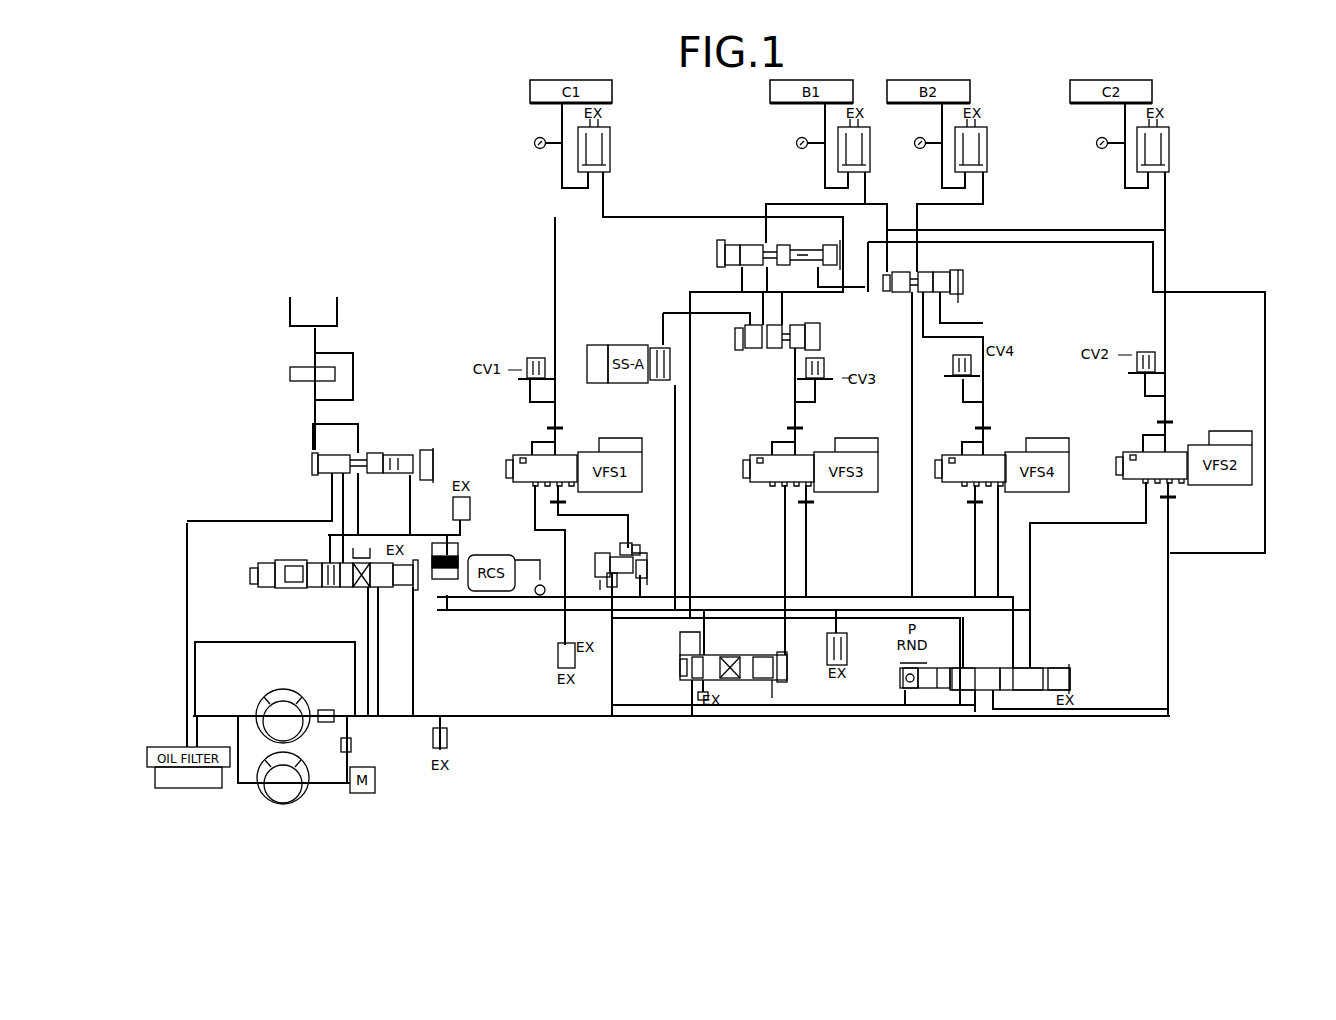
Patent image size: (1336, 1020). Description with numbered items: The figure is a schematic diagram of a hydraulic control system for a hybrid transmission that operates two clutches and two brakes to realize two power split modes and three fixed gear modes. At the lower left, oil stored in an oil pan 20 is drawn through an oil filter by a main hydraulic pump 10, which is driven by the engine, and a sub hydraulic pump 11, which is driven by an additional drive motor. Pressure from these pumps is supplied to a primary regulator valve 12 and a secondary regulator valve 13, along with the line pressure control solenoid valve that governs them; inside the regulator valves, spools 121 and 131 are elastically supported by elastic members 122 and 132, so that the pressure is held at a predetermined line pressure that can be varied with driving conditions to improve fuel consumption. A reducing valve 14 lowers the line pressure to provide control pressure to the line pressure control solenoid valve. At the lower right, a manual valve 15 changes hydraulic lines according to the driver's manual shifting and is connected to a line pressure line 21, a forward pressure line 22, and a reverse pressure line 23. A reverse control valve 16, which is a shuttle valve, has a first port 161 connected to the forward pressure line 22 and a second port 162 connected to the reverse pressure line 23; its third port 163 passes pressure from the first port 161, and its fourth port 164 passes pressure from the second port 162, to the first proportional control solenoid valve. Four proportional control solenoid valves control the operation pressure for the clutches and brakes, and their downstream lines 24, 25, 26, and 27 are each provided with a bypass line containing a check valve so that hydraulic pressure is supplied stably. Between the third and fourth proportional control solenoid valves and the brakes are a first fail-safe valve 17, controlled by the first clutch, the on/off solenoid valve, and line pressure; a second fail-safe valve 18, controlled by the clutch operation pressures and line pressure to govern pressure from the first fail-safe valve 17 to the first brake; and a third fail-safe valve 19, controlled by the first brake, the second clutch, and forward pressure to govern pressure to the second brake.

The main hydraulic pump 10 is at (272, 690).
The sub hydraulic pump 11 is at (283, 806).
The primary regulator valve 12 is at (250, 578).
The spool 121 is at (343, 588).
The elastic member 122 is at (317, 588).
The secondary regulator valve 13 is at (312, 463).
The spool 131 is at (379, 453).
The elastic member 132 is at (408, 455).
The reducing valve 14 is at (680, 667).
The manual valve 15 is at (1072, 678).
The reverse control valve 16 is at (641, 545).
The first port 161 is at (644, 575).
The second port 162 is at (607, 580).
The third port 163 is at (640, 548).
The fourth port 164 is at (620, 549).
The first fail-safe valve 17 is at (822, 345).
The second fail-safe valve 18 is at (752, 213).
The third fail-safe valve 19 is at (968, 283).
The oil pan 20 is at (170, 790).
The line pressure line 21 is at (943, 718).
The forward pressure line 22 is at (1030, 655).
The reverse pressure line 23 is at (977, 694).
The line downstream of VFS1 24 is at (552, 430).
The line downstream of VFS2 25 is at (1167, 425).
The line downstream of VFS3 26 is at (797, 428).
The line downstream of VFS4 27 is at (984, 412).